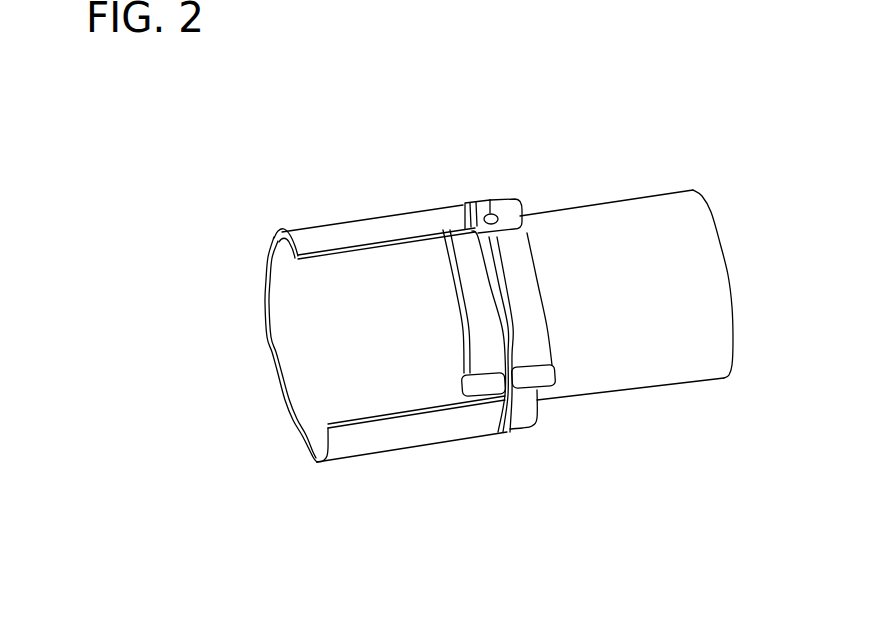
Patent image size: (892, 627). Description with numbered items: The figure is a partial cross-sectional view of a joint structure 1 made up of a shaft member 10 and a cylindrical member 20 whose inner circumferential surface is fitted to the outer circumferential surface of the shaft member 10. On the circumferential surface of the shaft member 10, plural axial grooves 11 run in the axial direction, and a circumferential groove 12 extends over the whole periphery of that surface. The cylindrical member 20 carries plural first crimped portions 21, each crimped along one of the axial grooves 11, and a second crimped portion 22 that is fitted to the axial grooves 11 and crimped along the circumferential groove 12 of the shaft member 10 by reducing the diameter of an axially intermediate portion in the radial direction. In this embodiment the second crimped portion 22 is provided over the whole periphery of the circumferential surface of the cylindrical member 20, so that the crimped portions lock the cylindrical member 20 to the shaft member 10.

The joint structure 1 is at (614, 145).
The shaft member 10 is at (673, 205).
The axial grooves 11 is at (452, 236).
The circumferential groove 12 is at (503, 318).
The cylindrical member 20 is at (330, 235).
The first crimped portions 21 is at (488, 199).
The second crimped portion 22 is at (459, 199).